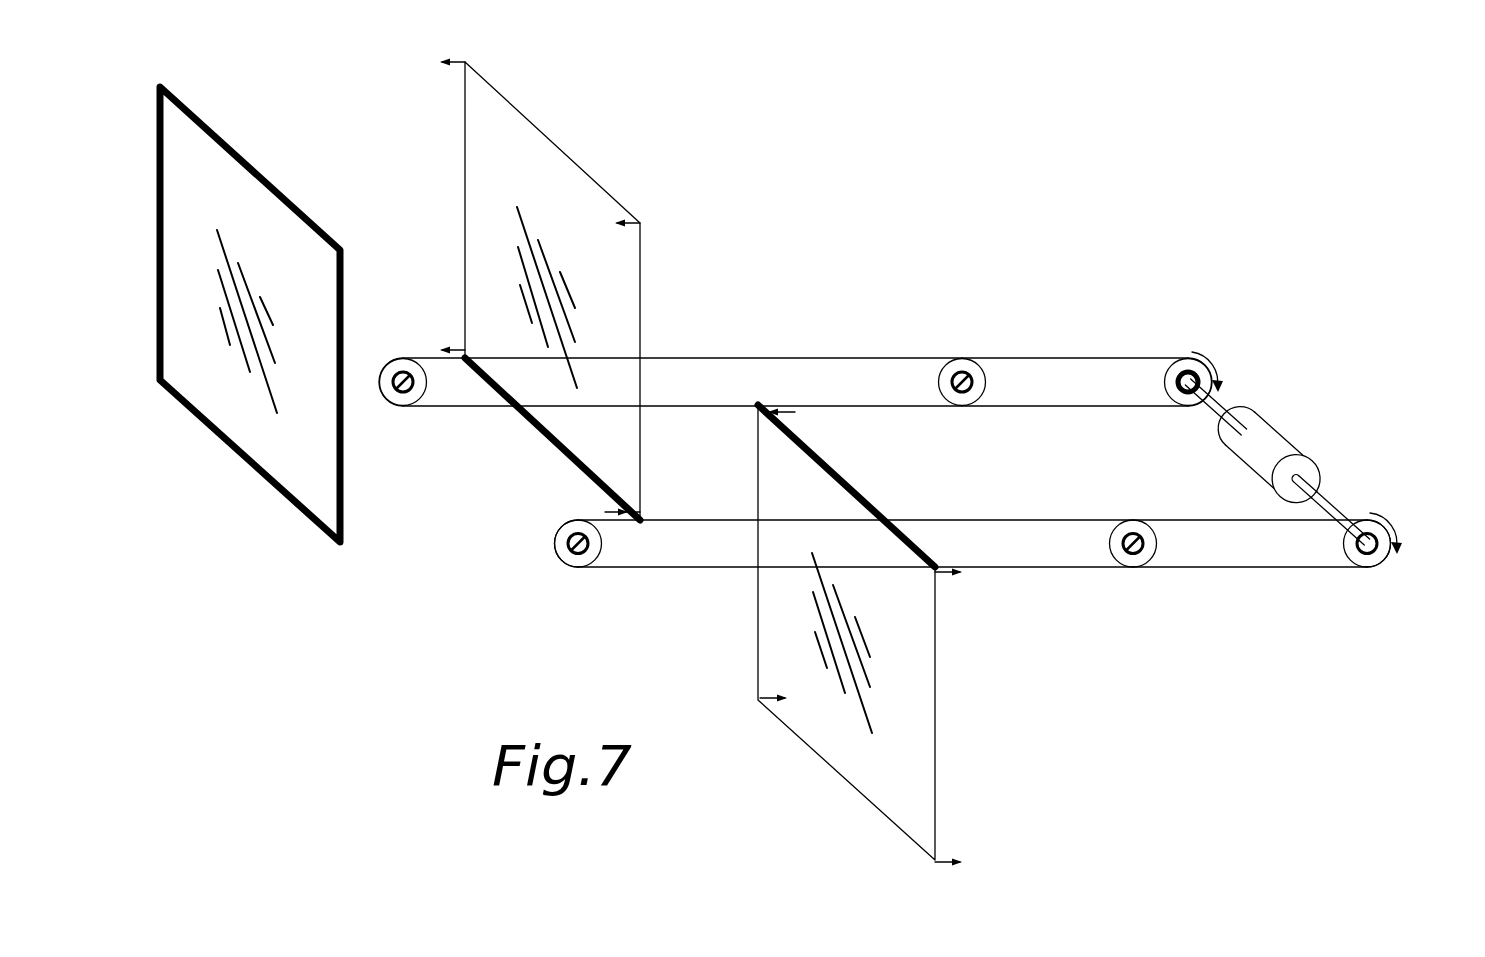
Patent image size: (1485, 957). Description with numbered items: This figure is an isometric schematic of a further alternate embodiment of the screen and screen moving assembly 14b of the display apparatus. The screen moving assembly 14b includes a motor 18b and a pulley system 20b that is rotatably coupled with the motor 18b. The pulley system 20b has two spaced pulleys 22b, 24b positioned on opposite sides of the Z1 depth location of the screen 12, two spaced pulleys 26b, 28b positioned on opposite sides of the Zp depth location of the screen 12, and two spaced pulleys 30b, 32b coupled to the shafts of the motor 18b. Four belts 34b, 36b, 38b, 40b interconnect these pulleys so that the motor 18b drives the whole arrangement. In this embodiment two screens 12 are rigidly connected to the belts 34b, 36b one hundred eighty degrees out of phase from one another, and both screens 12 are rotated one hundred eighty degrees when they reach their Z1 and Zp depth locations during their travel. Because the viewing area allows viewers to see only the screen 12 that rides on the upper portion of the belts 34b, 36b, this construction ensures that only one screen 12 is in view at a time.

The screen 12 is at (482, 166).
The screen moving assembly 14b is at (878, 168).
The motor 18b is at (1273, 438).
The pulley system 20b is at (963, 322).
The pulley 22b is at (414, 368).
The pulley 24b is at (567, 556).
The pulley 26b is at (948, 393).
The pulley 28b is at (1123, 556).
The pulley 30b is at (1203, 358).
The pulley 32b is at (1383, 520).
The belt 34b is at (792, 358).
The belt 36b is at (923, 518).
The belt 38b is at (1013, 357).
The belt 40b is at (1210, 568).